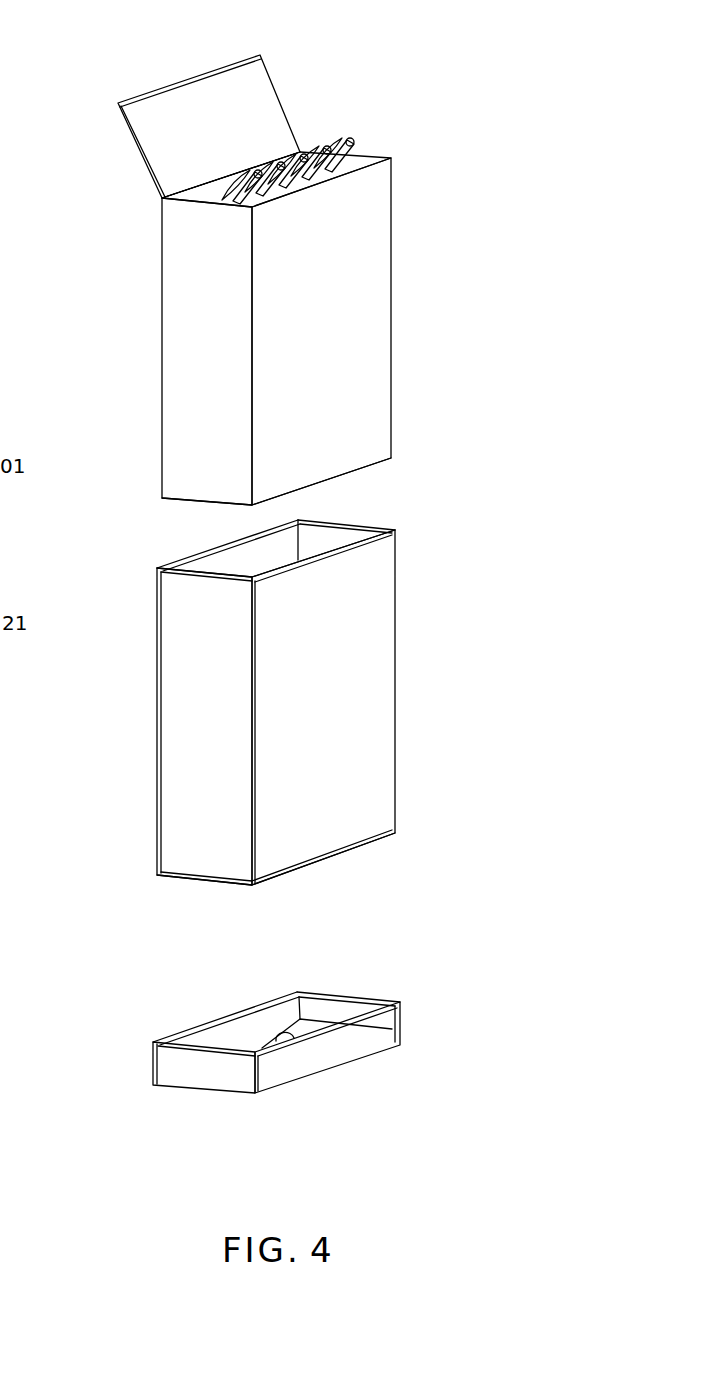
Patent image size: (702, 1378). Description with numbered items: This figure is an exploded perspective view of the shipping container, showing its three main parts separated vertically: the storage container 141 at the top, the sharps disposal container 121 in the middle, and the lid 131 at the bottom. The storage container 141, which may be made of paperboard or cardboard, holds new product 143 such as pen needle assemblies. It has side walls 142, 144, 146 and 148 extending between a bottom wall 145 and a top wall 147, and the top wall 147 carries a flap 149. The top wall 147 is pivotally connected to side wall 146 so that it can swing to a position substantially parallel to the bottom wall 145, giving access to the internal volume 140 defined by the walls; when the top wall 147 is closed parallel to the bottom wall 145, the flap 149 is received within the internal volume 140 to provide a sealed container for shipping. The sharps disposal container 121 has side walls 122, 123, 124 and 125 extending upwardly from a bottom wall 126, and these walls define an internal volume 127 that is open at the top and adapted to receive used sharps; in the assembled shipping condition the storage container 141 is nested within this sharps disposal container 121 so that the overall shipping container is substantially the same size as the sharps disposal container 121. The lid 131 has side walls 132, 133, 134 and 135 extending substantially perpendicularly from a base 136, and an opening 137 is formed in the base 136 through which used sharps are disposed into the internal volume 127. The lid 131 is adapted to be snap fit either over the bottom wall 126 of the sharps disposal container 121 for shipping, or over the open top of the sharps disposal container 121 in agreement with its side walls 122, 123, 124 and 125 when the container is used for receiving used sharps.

The sharps disposal container 121 is at (155, 755).
The side wall 122 is at (380, 770).
The side wall 123 is at (338, 535).
The side wall 124 is at (218, 558).
The side wall 125 is at (175, 640).
The bottom wall 126 is at (277, 880).
The internal volume 127 is at (263, 562).
The lid 131 is at (153, 1063).
The side wall 132 is at (302, 1063).
The side wall 133 is at (333, 1008).
The side wall 134 is at (225, 1030).
The side wall 135 is at (188, 1072).
The base 136 is at (297, 1020).
The opening 137 is at (267, 1038).
The internal volume 140 is at (200, 193).
The storage container 141 is at (162, 338).
The side wall 142 is at (380, 323).
The new product 143 is at (340, 155).
The side wall 144 is at (357, 158).
The bottom wall 145 is at (347, 475).
The side wall 146 is at (231, 103).
The top wall 147 is at (268, 102).
The side wall 148 is at (178, 264).
The flap 149 is at (158, 86).